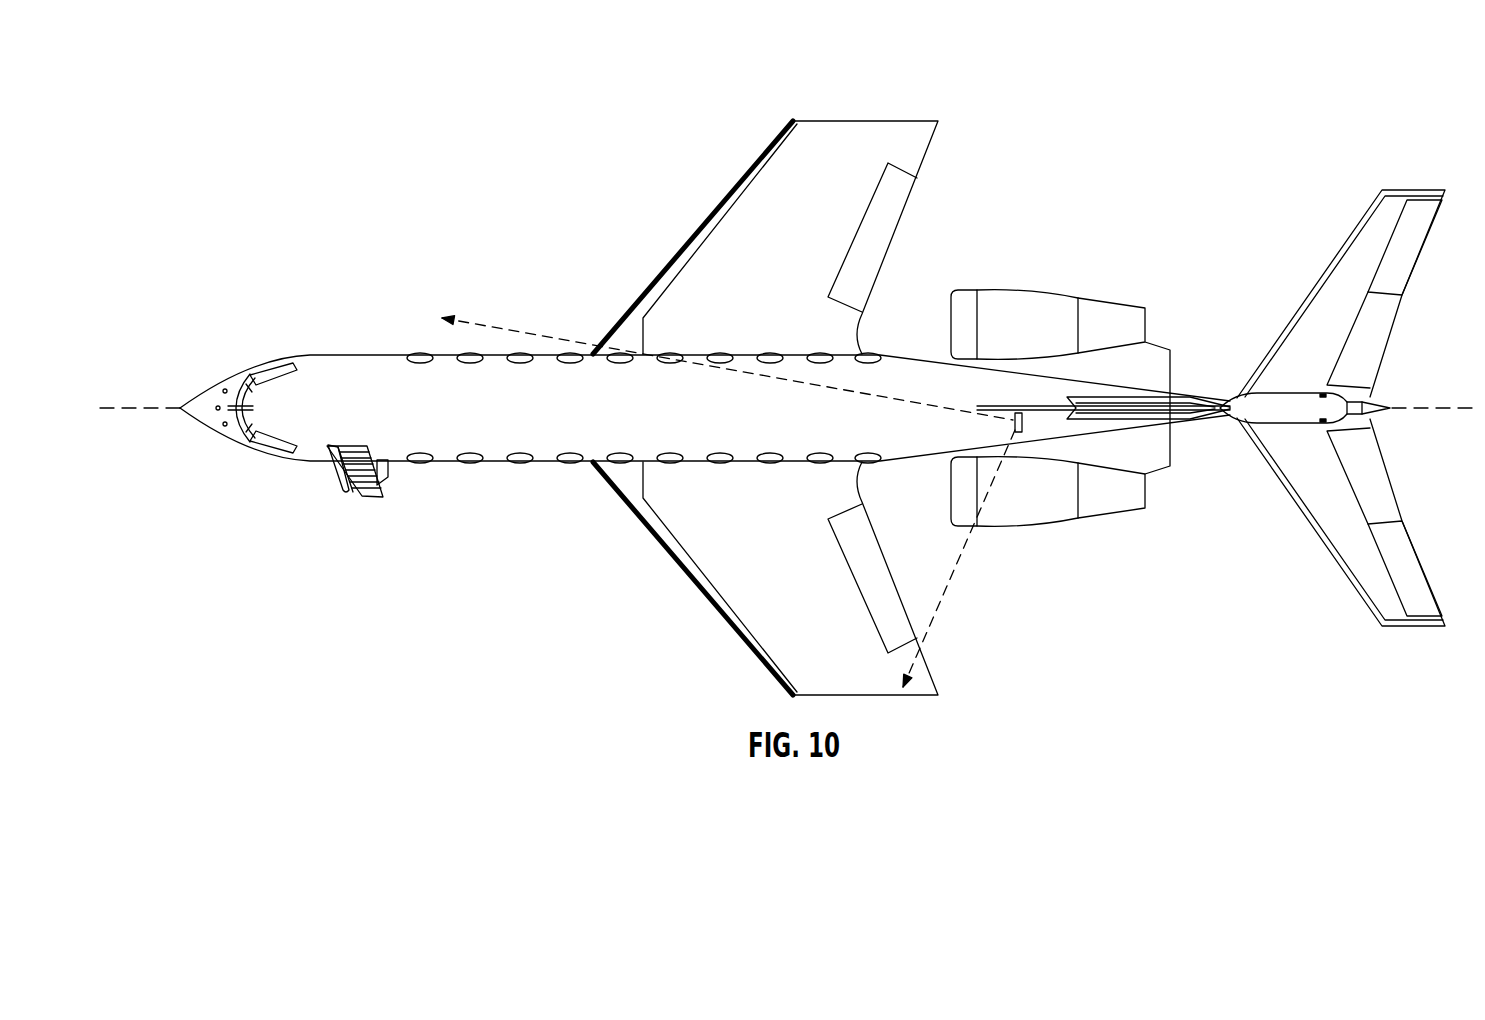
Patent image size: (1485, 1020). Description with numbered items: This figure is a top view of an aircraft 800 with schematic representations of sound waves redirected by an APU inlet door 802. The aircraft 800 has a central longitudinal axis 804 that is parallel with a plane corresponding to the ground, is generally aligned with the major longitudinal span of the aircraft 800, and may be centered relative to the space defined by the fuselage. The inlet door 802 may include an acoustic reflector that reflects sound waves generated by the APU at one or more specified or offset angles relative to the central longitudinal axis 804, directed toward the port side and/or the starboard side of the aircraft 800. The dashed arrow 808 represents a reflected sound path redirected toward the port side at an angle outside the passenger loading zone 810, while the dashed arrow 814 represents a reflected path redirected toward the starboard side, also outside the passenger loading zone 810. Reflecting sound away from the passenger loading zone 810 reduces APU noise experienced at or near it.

The aircraft 800 is at (737, 150).
The APU inlet door 802 is at (1018, 412).
The central longitudinal axis 804 is at (150, 406).
The dashed arrow 808 is at (942, 594).
The passenger loading zone 810 is at (385, 540).
The dashed arrow 814 is at (482, 322).